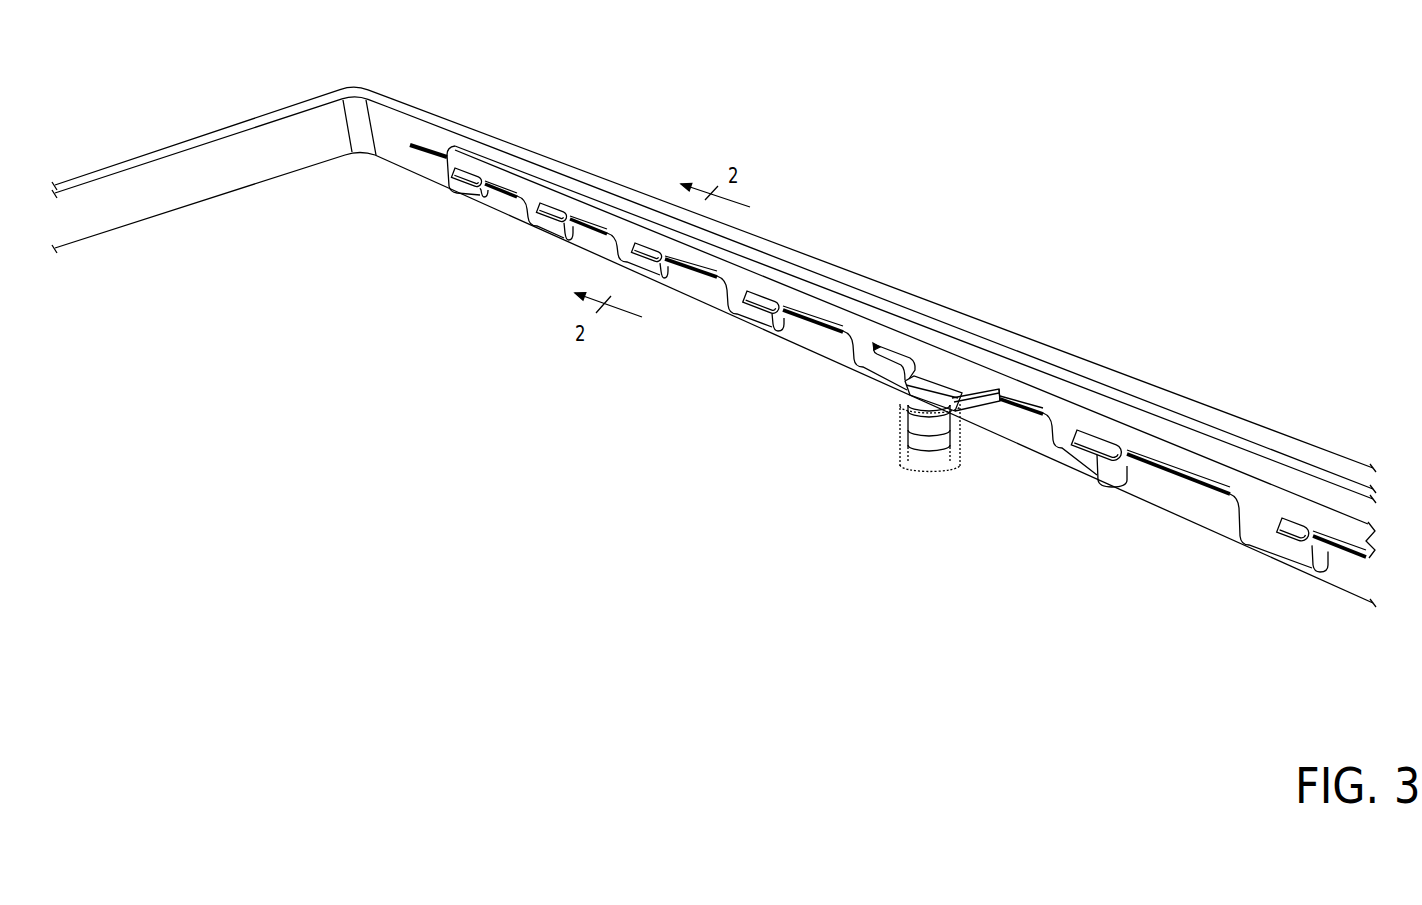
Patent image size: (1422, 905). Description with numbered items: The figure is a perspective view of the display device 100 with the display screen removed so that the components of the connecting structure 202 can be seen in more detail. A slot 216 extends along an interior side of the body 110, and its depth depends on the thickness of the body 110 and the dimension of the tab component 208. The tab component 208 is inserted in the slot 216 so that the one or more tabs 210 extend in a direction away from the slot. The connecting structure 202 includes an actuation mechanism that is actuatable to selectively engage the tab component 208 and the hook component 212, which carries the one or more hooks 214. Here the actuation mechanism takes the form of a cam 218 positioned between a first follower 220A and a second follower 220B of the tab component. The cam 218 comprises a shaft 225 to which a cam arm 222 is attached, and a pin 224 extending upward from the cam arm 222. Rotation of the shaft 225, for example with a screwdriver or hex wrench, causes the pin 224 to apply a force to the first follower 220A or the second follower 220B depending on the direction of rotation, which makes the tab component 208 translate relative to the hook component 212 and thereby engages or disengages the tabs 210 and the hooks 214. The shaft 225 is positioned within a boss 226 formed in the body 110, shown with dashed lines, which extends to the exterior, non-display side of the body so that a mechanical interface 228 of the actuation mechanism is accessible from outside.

The display device 100 is at (897, 162).
The body 110 is at (395, 92).
The connecting structure 202 is at (425, 188).
The tab component 208 is at (1320, 545).
The tabs 210 is at (1285, 548).
The hook component 212 is at (1213, 453).
The hooks 214 is at (1078, 457).
The slot 216 is at (430, 142).
The cam 218 is at (905, 400).
The first follower 220A is at (929, 375).
The second follower 220B is at (990, 392).
The cam arm 222 is at (949, 392).
The pin 224 is at (972, 390).
The shaft 225 is at (960, 439).
The boss 226 is at (898, 437).
The mechanical interface 228 is at (930, 480).